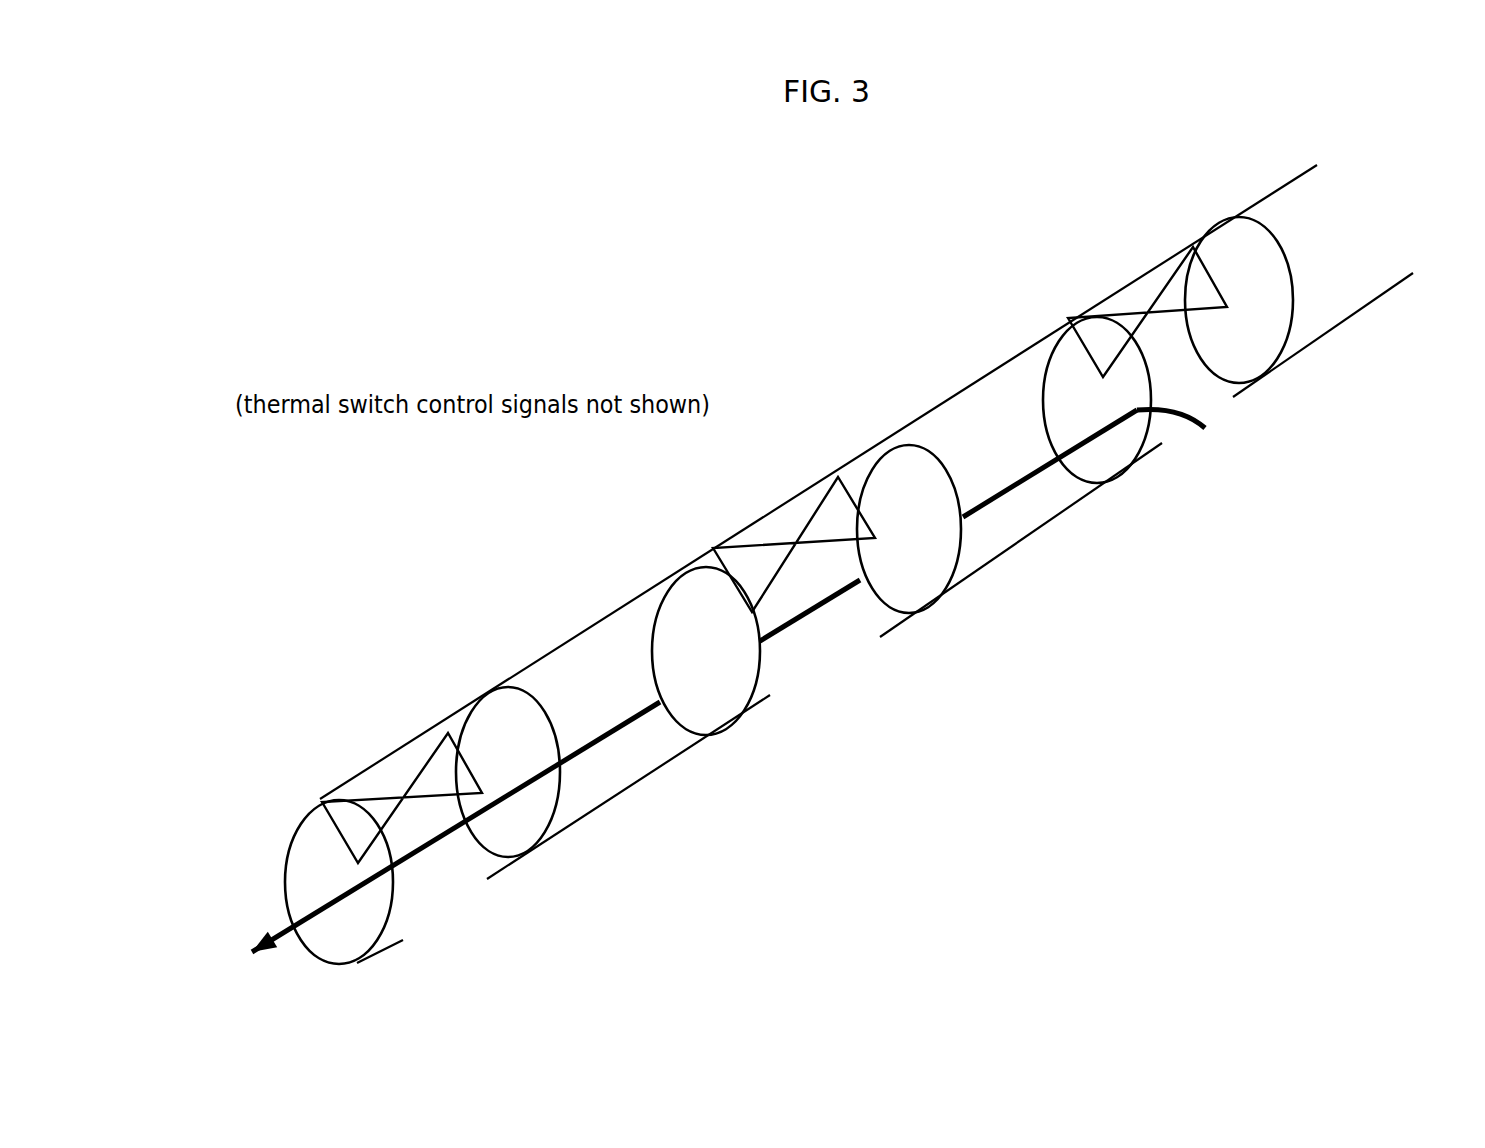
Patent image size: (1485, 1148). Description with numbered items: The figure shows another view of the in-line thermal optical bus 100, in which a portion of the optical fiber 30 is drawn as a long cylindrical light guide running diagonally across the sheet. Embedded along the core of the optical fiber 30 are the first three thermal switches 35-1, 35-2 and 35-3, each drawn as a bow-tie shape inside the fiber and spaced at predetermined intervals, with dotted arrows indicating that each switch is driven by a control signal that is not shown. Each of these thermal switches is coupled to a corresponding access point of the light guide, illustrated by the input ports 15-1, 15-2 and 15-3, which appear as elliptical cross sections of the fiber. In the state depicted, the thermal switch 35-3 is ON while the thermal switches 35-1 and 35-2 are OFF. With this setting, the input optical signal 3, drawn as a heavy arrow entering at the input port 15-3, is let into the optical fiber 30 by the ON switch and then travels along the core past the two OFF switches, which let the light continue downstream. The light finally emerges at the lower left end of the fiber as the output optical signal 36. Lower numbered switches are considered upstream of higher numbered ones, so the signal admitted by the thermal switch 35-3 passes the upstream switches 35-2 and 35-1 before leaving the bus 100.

The optical bus 100 is at (455, 145).
The optical fiber 30 is at (973, 372).
The input port 15-1 is at (538, 803).
The input port 15-2 is at (906, 561).
The input port 15-3 is at (1301, 332).
The thermal switch 35-1 is at (390, 732).
The thermal switch 35-2 is at (782, 476).
The thermal switch 35-3 is at (1123, 258).
The input optical signal 3 is at (1219, 445).
The output optical signal 36 is at (242, 950).